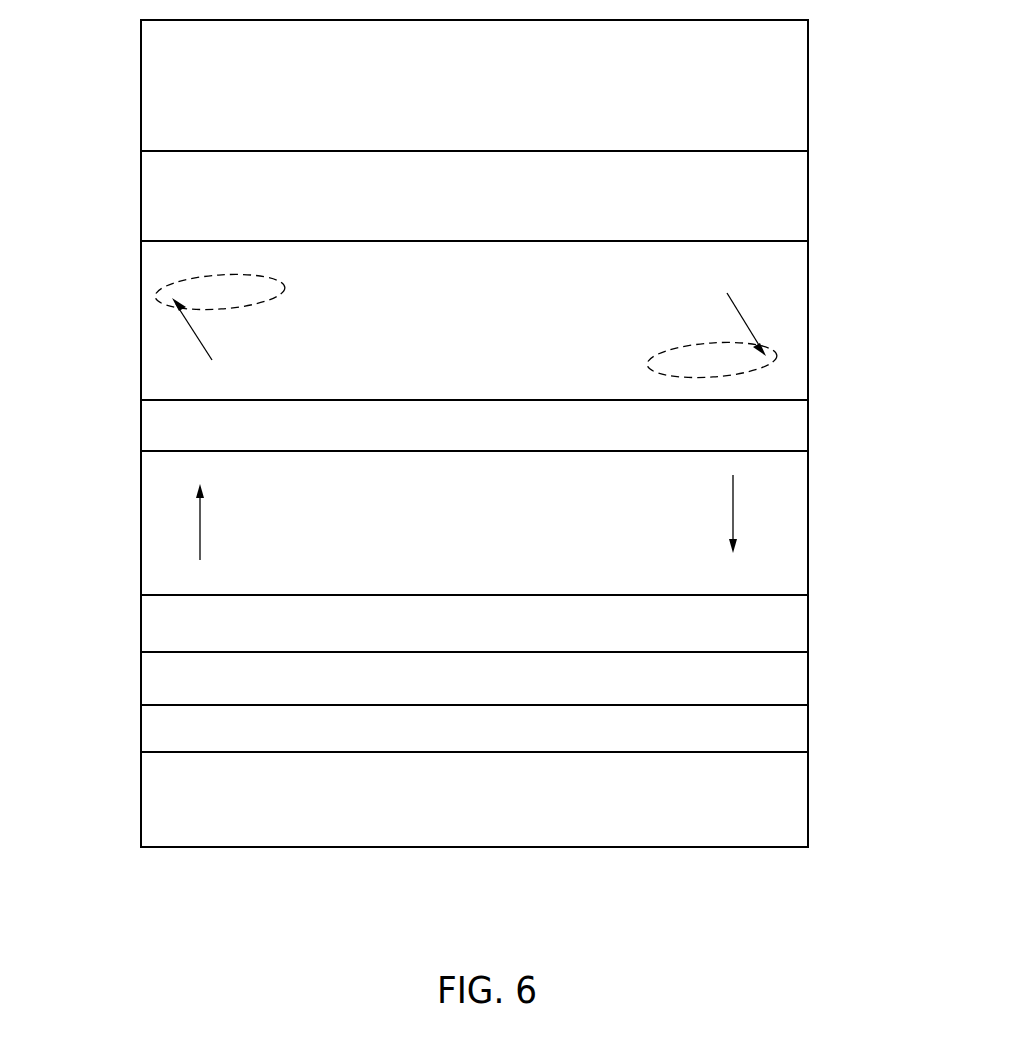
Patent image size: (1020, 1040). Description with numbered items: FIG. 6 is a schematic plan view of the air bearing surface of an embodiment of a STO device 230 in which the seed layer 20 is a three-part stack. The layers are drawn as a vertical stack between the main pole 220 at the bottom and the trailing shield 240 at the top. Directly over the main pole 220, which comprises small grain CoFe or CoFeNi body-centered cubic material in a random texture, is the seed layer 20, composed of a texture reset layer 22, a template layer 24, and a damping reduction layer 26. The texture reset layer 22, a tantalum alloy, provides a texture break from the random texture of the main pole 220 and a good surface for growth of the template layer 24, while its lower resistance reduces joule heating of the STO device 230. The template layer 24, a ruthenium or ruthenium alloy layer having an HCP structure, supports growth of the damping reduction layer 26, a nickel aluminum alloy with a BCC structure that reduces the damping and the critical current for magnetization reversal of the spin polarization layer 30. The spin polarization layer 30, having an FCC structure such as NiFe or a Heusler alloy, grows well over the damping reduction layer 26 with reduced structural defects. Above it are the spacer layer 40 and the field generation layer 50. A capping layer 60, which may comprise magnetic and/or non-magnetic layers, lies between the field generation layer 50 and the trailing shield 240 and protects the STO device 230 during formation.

The STO device 230 is at (822, 219).
The trailing shield 240 is at (141, 87).
The capping layer 60 is at (141, 195).
The field generation layer 50 is at (141, 331).
The spacer layer 40 is at (141, 421).
The spin polarization layer 30 is at (141, 521).
The seed layer 20 is at (473, 673).
The damping reduction layer 26 is at (808, 628).
The template layer 24 is at (808, 685).
The texture reset layer 22 is at (808, 737).
The main pole 220 is at (141, 800).